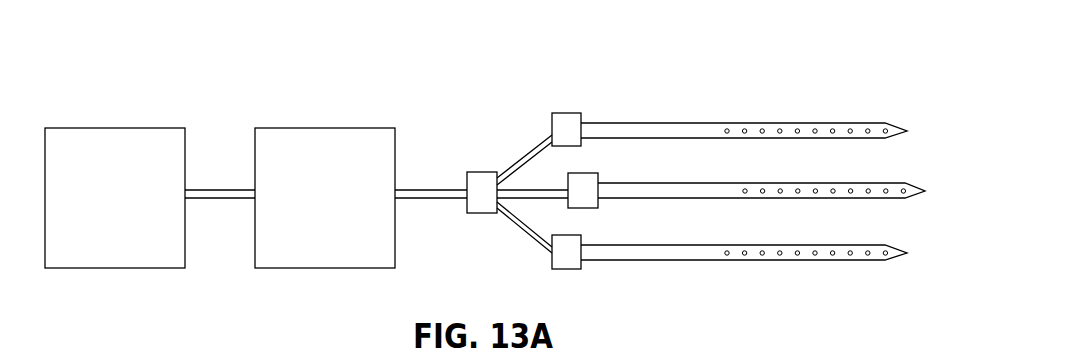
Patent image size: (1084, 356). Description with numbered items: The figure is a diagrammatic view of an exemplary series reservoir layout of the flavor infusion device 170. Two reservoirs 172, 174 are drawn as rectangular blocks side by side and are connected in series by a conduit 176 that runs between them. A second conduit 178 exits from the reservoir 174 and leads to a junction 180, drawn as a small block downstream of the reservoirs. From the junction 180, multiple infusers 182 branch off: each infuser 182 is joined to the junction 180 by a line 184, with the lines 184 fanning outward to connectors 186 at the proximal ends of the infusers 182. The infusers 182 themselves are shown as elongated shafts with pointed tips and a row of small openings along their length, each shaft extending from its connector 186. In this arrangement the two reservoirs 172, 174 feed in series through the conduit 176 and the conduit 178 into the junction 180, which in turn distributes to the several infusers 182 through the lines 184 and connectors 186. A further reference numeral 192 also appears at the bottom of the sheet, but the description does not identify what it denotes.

The flavor infusion device 170 is at (803, 78).
The reservoir 172 is at (148, 128).
The reservoir 174 is at (323, 128).
The conduit 176 is at (200, 190).
The conduit 178 is at (402, 190).
The junction 180 is at (472, 172).
The infuser 182 is at (614, 124).
The line 184 is at (516, 160).
The connector 186 is at (565, 113).
The reference numeral 192 is at (236, 345).